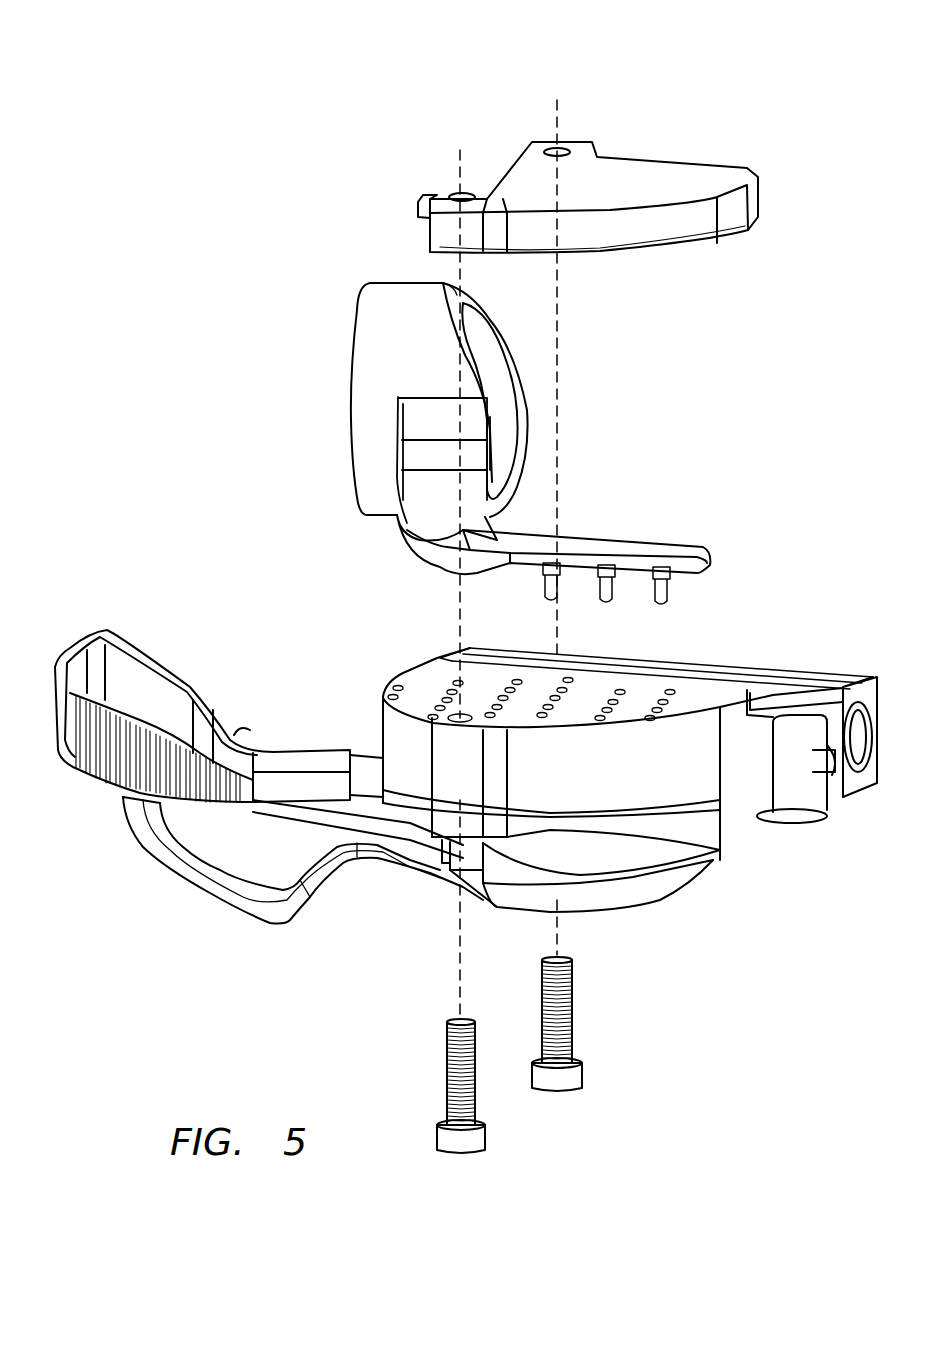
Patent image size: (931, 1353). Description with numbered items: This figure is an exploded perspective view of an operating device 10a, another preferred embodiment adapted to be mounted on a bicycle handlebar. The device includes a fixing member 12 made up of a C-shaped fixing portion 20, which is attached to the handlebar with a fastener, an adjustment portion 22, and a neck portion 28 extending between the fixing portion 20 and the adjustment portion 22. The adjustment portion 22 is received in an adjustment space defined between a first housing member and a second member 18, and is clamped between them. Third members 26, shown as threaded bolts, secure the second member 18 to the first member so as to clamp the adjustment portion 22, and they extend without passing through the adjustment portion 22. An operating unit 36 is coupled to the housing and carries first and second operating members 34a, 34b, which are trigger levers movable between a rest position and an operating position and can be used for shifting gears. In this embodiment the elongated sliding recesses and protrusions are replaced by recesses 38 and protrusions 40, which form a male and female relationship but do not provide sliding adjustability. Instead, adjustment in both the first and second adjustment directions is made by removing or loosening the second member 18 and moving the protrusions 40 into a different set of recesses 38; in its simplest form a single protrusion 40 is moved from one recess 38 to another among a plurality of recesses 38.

The operating device 10a is at (737, 123).
The fixing member 12 is at (628, 398).
The second member 18 is at (622, 167).
The fixing portion 20 is at (370, 357).
The adjustment portion 22 is at (640, 538).
The third member 26 is at (453, 1152).
The neck portion 28 is at (436, 520).
The first operating member 34a is at (128, 675).
The second operating member 34b is at (167, 868).
The operating unit 36 is at (680, 855).
The recesses 38 is at (670, 692).
The protrusions 40 is at (672, 590).